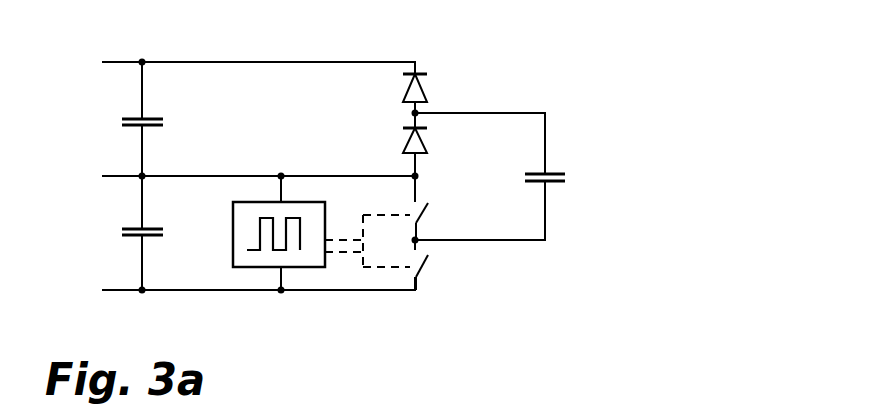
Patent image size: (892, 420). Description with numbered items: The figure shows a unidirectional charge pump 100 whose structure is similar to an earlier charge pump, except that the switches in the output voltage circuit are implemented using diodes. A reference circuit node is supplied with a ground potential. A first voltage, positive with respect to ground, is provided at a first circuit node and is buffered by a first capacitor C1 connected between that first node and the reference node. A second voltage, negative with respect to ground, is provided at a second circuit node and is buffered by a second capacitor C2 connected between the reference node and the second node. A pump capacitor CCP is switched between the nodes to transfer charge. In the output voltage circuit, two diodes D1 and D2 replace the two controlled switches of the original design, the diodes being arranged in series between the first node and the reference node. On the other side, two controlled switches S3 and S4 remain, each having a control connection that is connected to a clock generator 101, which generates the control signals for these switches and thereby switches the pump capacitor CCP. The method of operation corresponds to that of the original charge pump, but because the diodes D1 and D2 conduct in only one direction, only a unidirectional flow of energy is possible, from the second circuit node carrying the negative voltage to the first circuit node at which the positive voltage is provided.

The charge pump 100 is at (393, 179).
The clock generator 101 is at (233, 227).
The first capacitor C1 is at (128, 125).
The second capacitor C2 is at (128, 237).
The diode D1 is at (437, 89).
The diode D2 is at (437, 149).
The pump capacitor CCP is at (566, 181).
The controlled switch S3 is at (442, 218).
The controlled switch S4 is at (442, 274).